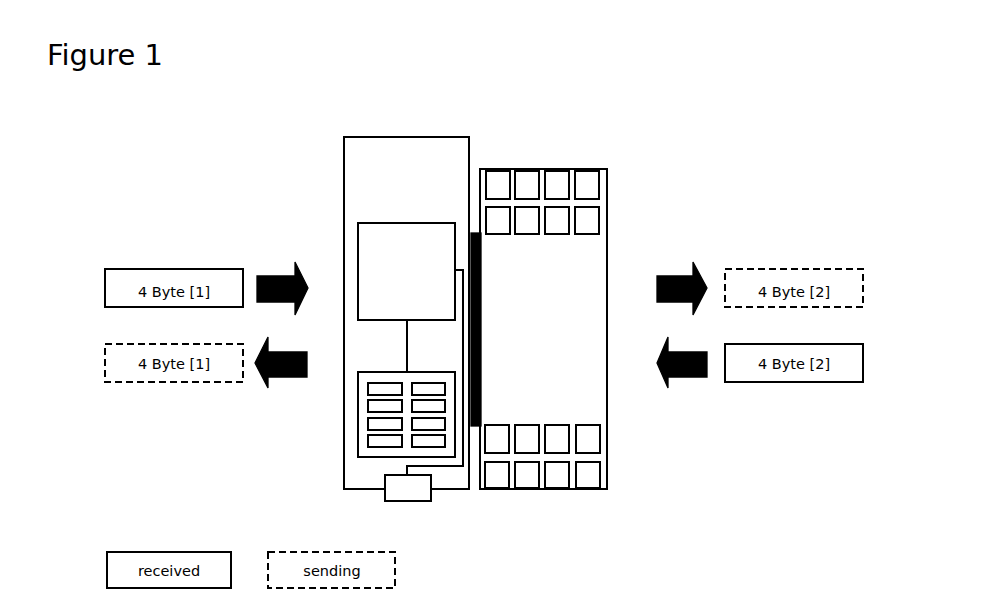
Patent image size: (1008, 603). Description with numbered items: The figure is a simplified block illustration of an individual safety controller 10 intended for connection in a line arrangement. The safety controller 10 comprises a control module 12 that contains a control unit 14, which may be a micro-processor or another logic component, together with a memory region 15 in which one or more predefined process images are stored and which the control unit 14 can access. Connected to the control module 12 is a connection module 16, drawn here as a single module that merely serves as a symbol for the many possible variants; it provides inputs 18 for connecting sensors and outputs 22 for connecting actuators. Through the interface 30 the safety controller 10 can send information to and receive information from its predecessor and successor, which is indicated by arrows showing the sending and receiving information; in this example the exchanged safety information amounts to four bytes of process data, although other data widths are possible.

The safety controller 10 is at (458, 88).
The control module 12 is at (363, 137).
The control unit 14 is at (407, 225).
The memory region 15 is at (382, 377).
The connection module 16 is at (607, 452).
The inputs 18 is at (557, 225).
The outputs 22 is at (520, 438).
The interface 30 is at (407, 502).